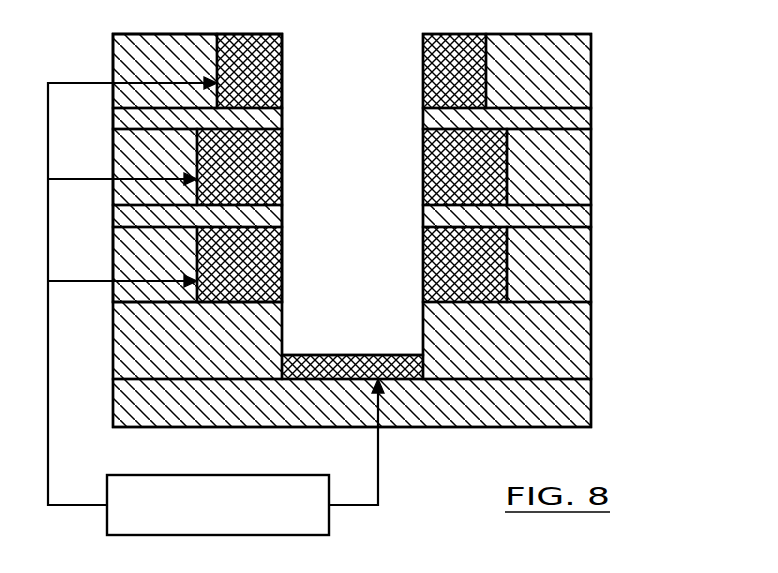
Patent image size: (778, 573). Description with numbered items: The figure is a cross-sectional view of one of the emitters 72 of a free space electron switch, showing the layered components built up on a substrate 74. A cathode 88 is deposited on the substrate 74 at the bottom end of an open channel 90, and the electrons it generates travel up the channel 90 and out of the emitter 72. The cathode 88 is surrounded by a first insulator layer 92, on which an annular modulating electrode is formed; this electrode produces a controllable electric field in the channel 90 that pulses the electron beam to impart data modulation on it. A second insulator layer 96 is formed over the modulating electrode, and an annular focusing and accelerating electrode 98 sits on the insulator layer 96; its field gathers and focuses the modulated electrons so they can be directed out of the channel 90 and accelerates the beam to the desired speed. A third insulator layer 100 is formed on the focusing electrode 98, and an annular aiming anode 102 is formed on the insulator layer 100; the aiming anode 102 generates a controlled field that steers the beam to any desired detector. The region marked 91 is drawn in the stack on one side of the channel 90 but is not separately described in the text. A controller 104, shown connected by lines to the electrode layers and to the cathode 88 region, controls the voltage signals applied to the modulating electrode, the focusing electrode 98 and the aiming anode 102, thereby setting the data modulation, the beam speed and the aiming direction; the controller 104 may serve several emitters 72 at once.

The emitter 72 is at (666, 141).
The substrate 74 is at (575, 407).
The cathode 88 is at (327, 355).
The open channel 90 is at (282, 219).
The sidewall electrode 91 is at (435, 271).
The first insulator layer 92 is at (545, 348).
The second insulator layer 96 is at (565, 215).
The focusing electrode 98 is at (480, 168).
The third insulator layer 100 is at (591, 118).
The aiming anode 102 is at (423, 77).
The controller 104 is at (210, 475).